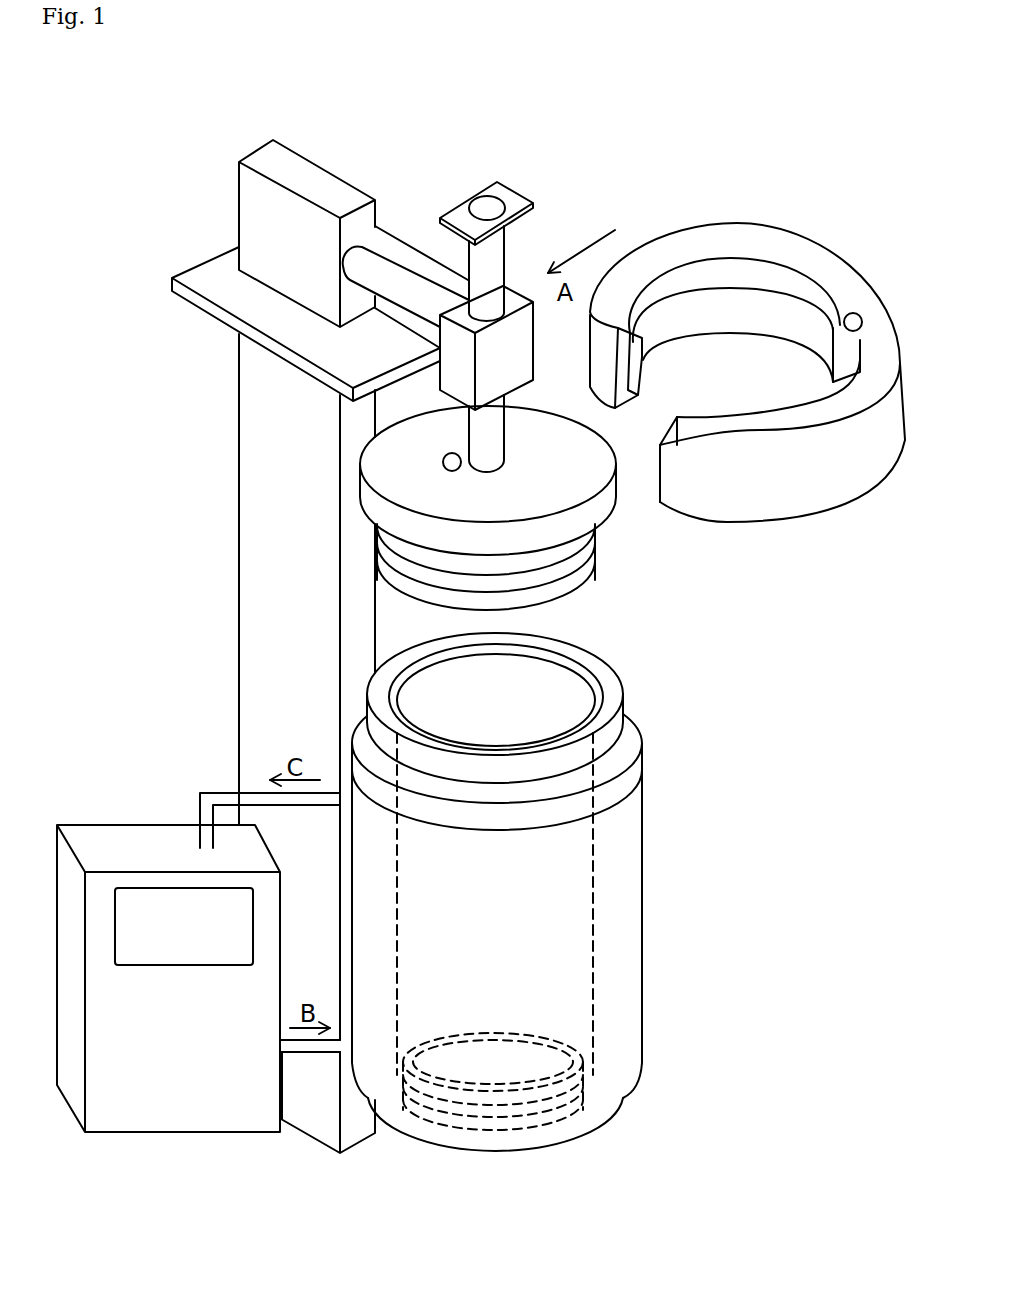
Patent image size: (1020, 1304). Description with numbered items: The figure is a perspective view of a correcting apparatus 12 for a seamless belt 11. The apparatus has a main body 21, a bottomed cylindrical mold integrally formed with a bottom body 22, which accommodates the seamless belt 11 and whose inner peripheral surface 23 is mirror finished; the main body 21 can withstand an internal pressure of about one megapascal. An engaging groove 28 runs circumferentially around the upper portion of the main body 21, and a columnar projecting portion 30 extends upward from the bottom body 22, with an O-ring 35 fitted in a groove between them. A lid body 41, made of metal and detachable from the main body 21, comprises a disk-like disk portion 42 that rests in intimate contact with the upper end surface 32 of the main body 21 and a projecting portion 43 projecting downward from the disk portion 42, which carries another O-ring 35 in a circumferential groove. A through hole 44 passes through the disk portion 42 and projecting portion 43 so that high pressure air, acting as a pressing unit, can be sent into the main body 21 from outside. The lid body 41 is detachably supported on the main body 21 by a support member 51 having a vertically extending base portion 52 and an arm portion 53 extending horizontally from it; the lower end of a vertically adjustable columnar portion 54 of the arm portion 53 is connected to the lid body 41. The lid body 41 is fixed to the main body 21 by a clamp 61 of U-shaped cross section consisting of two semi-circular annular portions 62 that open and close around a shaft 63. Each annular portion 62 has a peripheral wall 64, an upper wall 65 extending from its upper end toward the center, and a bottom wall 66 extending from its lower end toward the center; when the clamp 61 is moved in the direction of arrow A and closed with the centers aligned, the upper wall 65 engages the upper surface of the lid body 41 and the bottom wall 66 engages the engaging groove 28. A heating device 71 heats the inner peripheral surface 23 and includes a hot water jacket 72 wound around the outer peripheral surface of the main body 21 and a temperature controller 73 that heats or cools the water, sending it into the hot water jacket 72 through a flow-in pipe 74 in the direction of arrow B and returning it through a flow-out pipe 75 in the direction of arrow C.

The seamless belt 11 is at (623, 694).
The correcting apparatus 12 is at (590, 132).
The main body 21 is at (626, 677).
The bottom body 22 is at (617, 1131).
The inner peripheral surface 23 is at (587, 664).
The engaging groove 28 is at (614, 763).
The projecting portion 30 is at (590, 1043).
The upper end surface 32 is at (560, 646).
The O-ring 35 is at (597, 548).
The lid body 41 is at (617, 498).
The disk portion 42 is at (607, 512).
The projecting portion 43 is at (597, 567).
The through hole 44 is at (442, 462).
The support member 51 is at (432, 76).
The base portion 52 is at (321, 160).
The arm portion 53 is at (460, 165).
The columnar portion 54 is at (506, 250).
The clamp 61 is at (766, 187).
The annular portion 62 is at (690, 222).
The shaft 63 is at (859, 314).
The peripheral wall 64 is at (599, 367).
The upper wall 65 is at (799, 247).
The bottom wall 66 is at (671, 350).
The heating device 71 is at (127, 696).
The hot water jacket 72 is at (362, 745).
The temperature controller 73 is at (133, 835).
The flow-in pipe 74 is at (313, 1055).
The flow-out pipe 75 is at (215, 800).